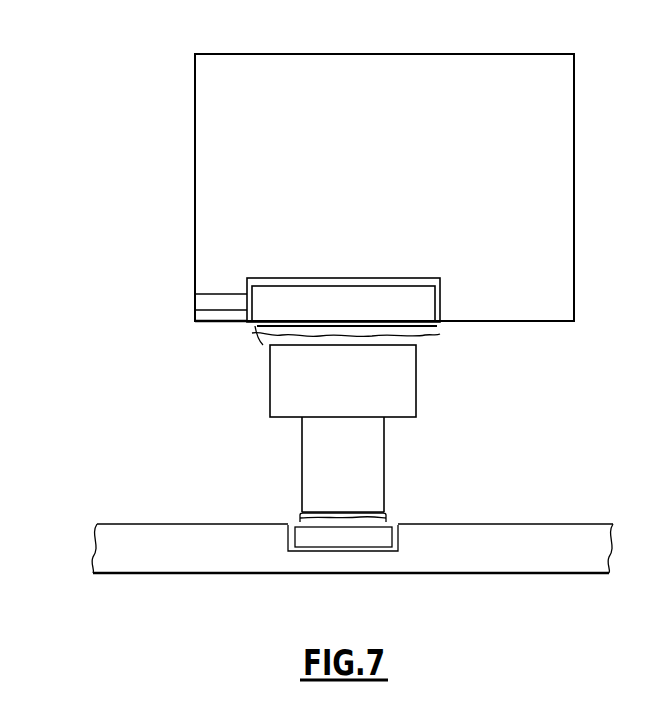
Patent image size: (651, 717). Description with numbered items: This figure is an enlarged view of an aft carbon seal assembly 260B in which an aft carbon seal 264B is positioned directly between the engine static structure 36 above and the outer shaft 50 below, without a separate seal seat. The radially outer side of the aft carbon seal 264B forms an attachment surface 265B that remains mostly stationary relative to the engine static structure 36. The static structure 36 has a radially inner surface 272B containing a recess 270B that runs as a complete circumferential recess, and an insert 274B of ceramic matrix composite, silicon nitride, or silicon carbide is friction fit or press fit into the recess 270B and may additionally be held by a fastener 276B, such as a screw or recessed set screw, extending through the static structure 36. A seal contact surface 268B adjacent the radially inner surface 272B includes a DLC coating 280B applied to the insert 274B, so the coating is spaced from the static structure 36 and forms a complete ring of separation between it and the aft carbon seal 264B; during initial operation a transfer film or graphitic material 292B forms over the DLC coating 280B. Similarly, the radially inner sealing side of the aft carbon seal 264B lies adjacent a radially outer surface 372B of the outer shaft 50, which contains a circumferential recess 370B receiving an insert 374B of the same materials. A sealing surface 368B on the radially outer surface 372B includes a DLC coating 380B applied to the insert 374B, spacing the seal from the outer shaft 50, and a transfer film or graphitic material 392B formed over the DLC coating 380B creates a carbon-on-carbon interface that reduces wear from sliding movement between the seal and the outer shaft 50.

The engine static structure 36 is at (402, 175).
The outer shaft 50 is at (493, 562).
The aft carbon seal assembly 260B is at (138, 406).
The aft carbon seal 264B is at (377, 394).
The attachment surface 265B is at (420, 348).
The seal contact surface 268B is at (438, 337).
The recess 270B is at (438, 283).
The radially inner surface 272B is at (458, 322).
The insert 274B is at (378, 313).
The fastener 276B is at (221, 300).
The DLC coating 280B is at (258, 327).
The transfer film or graphitic material 292B is at (262, 338).
The sealing surface 368B is at (390, 527).
The recess 370B is at (358, 553).
The radially outer surface 372B is at (440, 524).
The insert 374B is at (303, 538).
The DLC coating 380B is at (301, 522).
The transfer film or graphitic material 392B is at (386, 515).